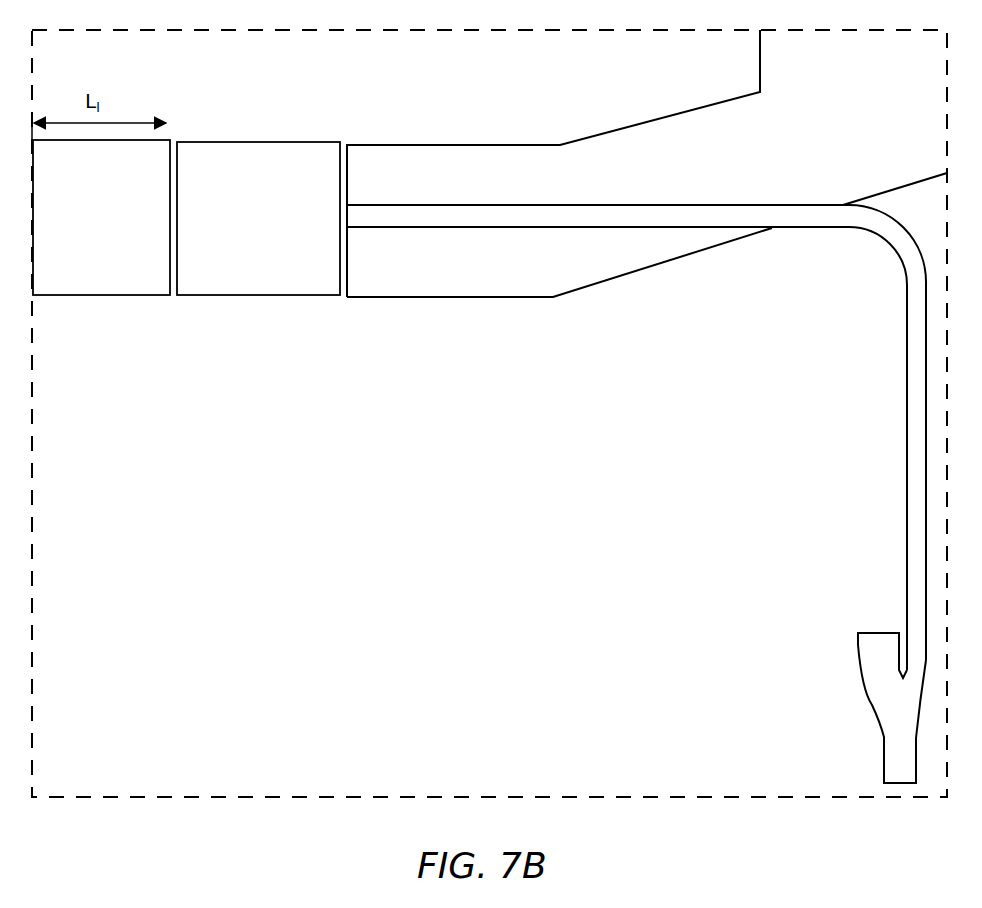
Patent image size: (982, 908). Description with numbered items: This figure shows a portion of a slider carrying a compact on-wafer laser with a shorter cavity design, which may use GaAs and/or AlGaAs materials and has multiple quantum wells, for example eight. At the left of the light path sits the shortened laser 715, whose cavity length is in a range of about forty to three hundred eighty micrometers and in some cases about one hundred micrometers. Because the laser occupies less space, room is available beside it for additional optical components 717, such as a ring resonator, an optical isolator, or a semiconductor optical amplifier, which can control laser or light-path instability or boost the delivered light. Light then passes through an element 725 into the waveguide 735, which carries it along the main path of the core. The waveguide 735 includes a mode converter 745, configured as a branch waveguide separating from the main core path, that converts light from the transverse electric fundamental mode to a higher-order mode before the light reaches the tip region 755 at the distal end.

The shortened laser 715 is at (145, 268).
The additional optical components 717 is at (278, 277).
The nozzle body 725 is at (498, 278).
The waveguide 735 is at (680, 212).
The mode converter 745 is at (808, 692).
The tip 755 is at (900, 777).